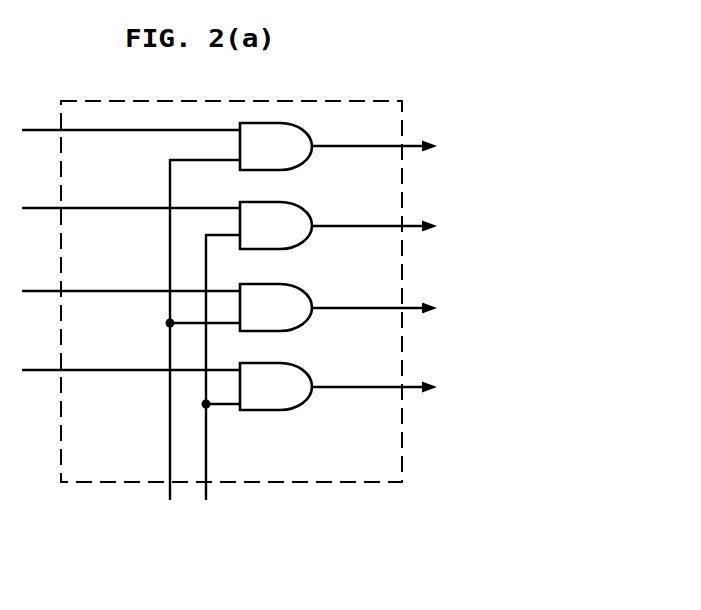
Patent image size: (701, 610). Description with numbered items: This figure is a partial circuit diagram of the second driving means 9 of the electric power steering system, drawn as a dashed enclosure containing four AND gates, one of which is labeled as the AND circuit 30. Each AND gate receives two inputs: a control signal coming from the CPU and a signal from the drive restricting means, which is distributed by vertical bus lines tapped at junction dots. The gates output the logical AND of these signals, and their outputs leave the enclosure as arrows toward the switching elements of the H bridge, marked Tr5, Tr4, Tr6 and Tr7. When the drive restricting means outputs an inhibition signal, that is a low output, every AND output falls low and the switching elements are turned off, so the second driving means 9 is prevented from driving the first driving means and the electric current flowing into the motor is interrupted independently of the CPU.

The second driving means 9 is at (258, 278).
The AND circuit 30 is at (268, 411).
The transistor Tr5 drive output Tr5 is at (403, 148).
The transistor Tr4 drive output Tr4 is at (403, 228).
The transistor Tr6 drive output Tr6 is at (403, 310).
The transistor Tr7 drive output Tr7 is at (403, 389).